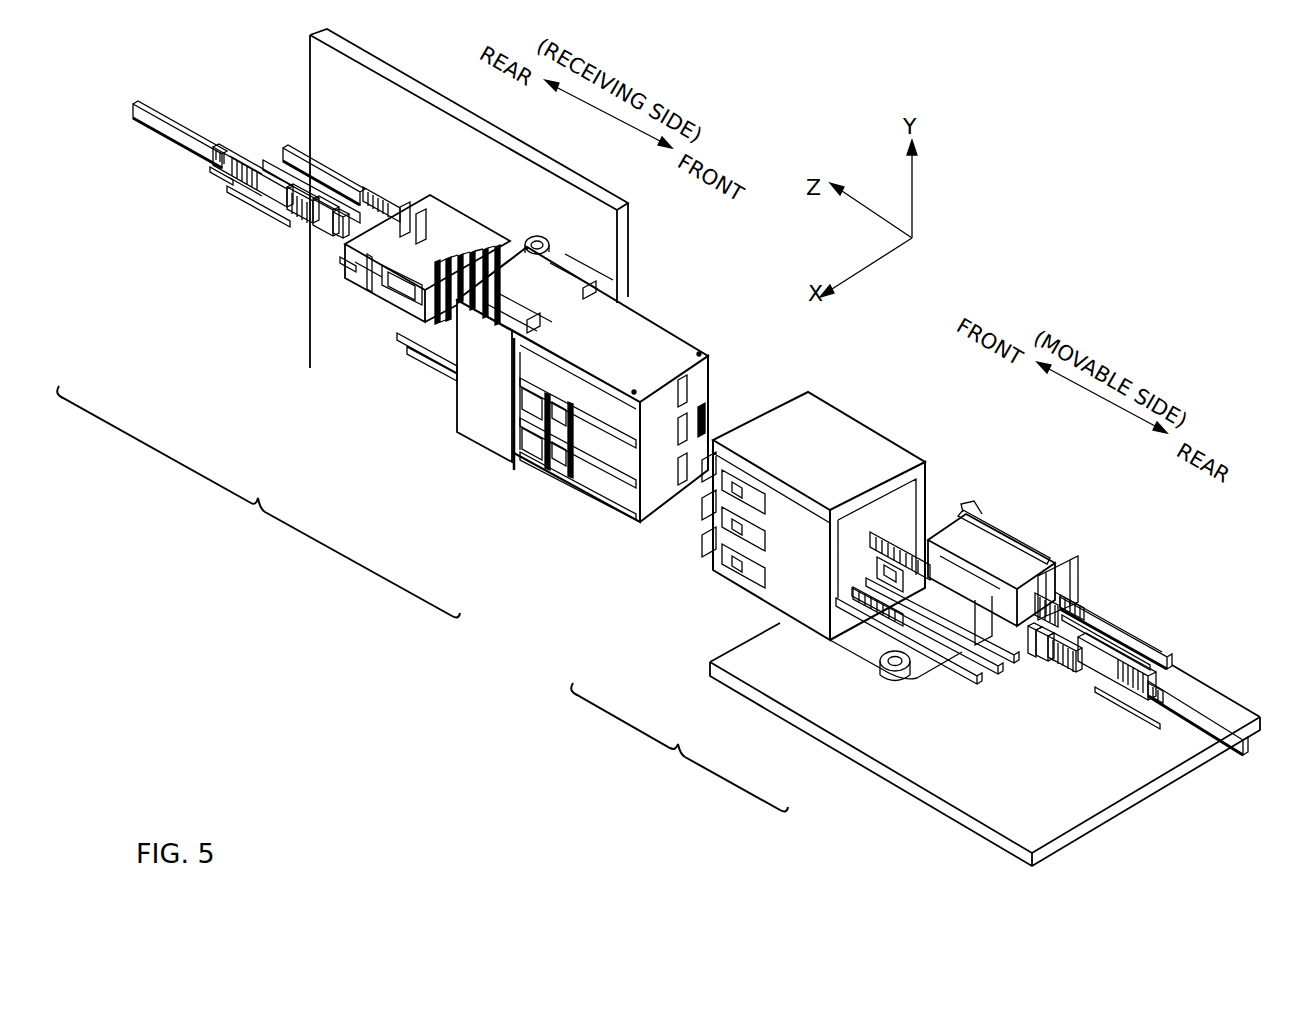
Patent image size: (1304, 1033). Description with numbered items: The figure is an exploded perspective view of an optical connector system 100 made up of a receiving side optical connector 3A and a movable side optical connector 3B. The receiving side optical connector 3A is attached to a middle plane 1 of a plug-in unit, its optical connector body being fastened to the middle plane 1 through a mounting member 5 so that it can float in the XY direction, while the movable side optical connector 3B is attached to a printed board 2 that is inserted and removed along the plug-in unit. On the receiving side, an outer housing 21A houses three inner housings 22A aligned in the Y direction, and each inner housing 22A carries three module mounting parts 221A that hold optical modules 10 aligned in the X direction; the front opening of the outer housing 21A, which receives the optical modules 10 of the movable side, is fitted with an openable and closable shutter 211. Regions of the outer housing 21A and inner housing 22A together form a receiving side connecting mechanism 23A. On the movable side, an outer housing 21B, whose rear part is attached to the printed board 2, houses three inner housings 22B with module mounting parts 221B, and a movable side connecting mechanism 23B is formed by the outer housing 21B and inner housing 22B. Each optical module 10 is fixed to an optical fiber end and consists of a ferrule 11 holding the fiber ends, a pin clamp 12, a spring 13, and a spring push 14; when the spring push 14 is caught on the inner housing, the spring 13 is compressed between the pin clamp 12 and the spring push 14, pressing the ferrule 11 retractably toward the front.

The middle plane 1 is at (458, 135).
The printed board 2 is at (946, 778).
The receiving side optical connector 3A is at (258, 501).
The movable side optical connector 3B is at (679, 747).
The mounting member 5 is at (478, 444).
The optical module 10 is at (385, 200).
The ferrule 11 is at (483, 253).
The pin clamp 12 is at (333, 234).
The spring 13 is at (306, 230).
The spring push 14 is at (262, 213).
The outer housing 21A is at (660, 328).
The outer housing 21B is at (823, 420).
The inner housing 22A is at (360, 282).
The inner housing 22B is at (997, 553).
The receiving side connecting mechanism 23A is at (400, 296).
The movable side connecting mechanism 23B is at (727, 576).
The shutter 211 is at (716, 358).
The module mounting part 221A is at (440, 338).
The module mounting part 221B is at (1052, 562).
The optical connector system 100 is at (339, 784).